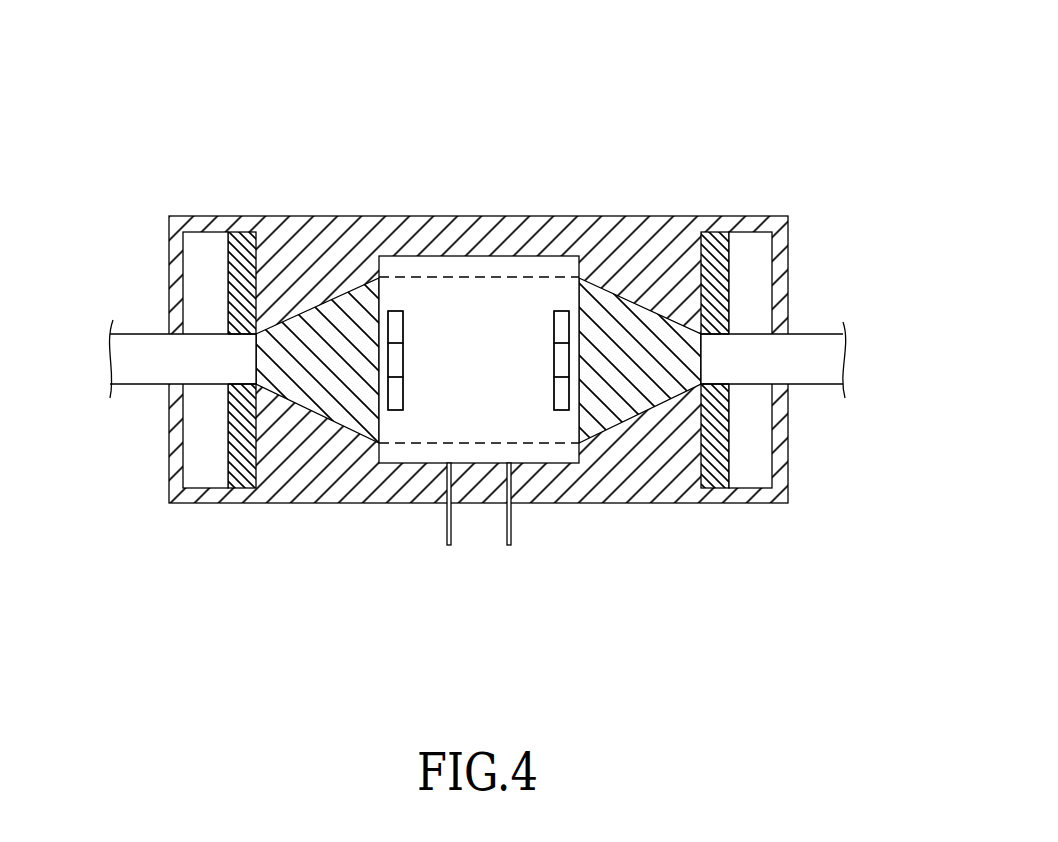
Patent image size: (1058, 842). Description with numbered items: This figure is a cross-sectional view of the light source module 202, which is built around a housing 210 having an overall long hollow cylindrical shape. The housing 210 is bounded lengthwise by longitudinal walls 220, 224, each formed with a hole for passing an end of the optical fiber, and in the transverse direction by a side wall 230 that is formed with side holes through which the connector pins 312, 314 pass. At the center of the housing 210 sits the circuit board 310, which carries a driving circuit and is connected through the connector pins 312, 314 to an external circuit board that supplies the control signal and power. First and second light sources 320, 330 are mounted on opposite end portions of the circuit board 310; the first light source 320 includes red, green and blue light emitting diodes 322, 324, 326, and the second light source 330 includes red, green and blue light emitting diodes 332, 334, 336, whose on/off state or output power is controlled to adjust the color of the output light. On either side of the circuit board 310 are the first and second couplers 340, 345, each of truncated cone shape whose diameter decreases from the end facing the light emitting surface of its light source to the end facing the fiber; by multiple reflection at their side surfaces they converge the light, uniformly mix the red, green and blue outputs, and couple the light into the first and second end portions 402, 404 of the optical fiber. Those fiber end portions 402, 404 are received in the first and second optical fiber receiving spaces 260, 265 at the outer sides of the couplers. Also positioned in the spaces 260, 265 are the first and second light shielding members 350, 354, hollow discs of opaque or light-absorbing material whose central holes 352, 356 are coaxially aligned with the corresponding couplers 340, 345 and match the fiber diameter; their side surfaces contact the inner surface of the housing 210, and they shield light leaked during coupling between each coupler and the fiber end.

The light source module 202 is at (490, 36).
The housing 210 is at (478, 388).
The longitudinal wall 220 is at (175, 468).
The longitudinal wall 224 is at (785, 472).
The side wall 230 is at (315, 480).
The first optical fiber receiving space 260 is at (205, 245).
The second optical fiber receiving space 265 is at (750, 245).
The circuit board 310 is at (472, 295).
The connector pin 312 is at (447, 523).
The connector pin 314 is at (511, 523).
The first light source 320 is at (415, 298).
The red light emitting diode 322 is at (403, 328).
The green light emitting diode 324 is at (403, 362).
The blue light emitting diode 326 is at (403, 395).
The second light source 330 is at (558, 294).
The red light emitting diode 332 is at (554, 328).
The green light emitting diode 334 is at (554, 362).
The blue light emitting diode 336 is at (554, 395).
The first coupler 340 is at (318, 330).
The second coupler 345 is at (643, 333).
The first light shielding member 350 is at (243, 243).
The hole 352 is at (233, 333).
The second light shielding member 354 is at (712, 236).
The hole 356 is at (720, 330).
The first end portion of the optical fiber 402 is at (142, 372).
The second end portion of the optical fiber 404 is at (815, 372).